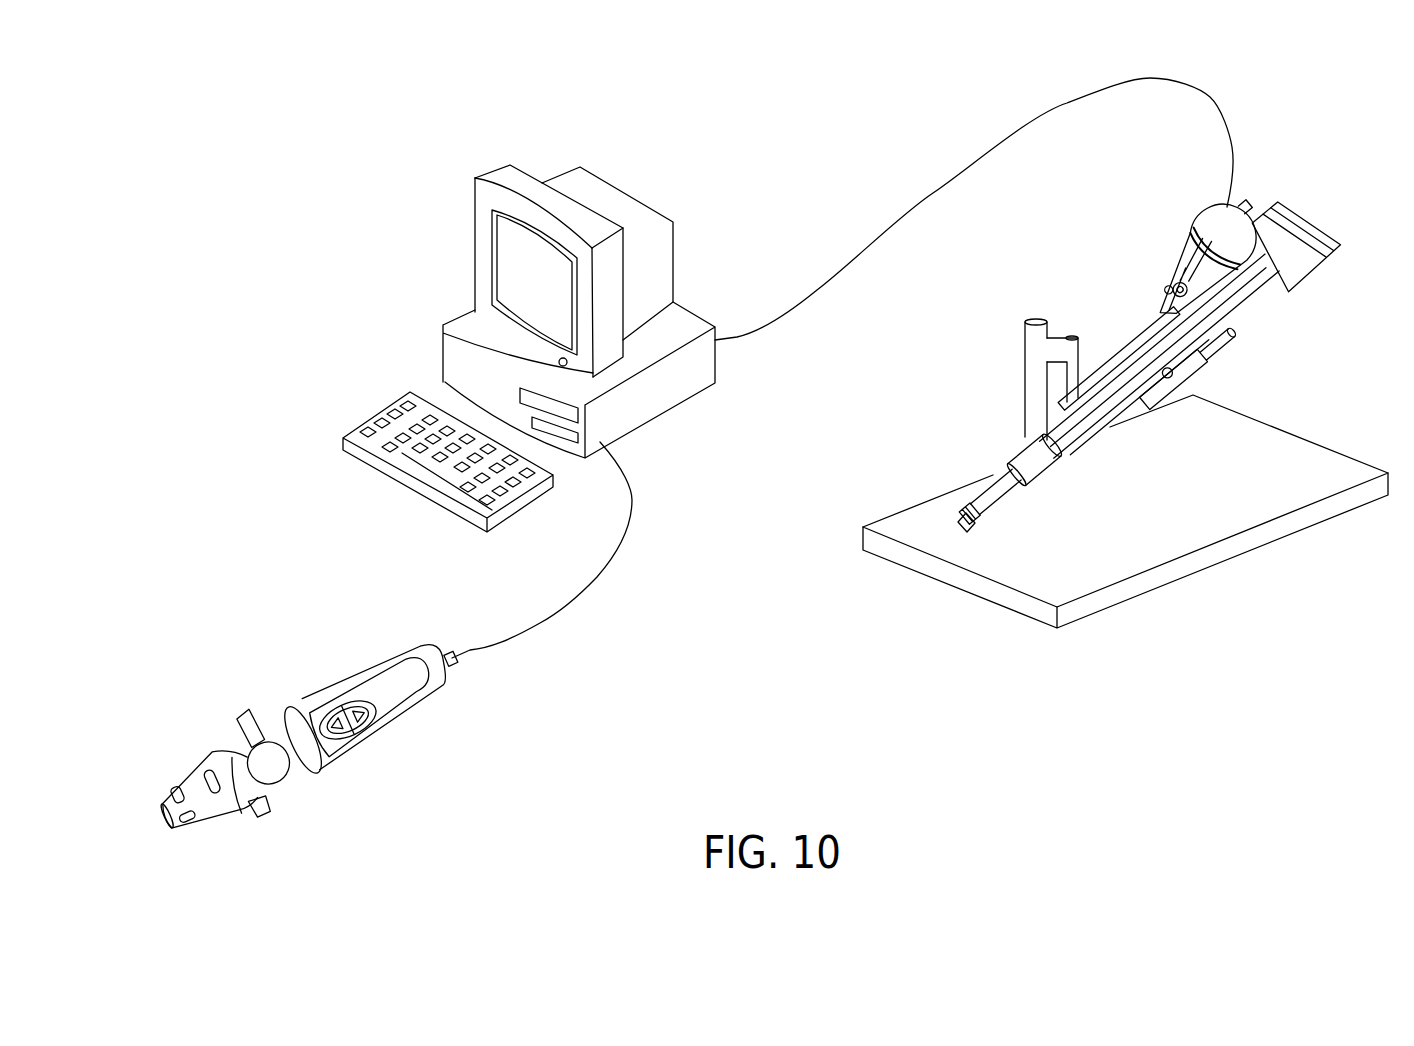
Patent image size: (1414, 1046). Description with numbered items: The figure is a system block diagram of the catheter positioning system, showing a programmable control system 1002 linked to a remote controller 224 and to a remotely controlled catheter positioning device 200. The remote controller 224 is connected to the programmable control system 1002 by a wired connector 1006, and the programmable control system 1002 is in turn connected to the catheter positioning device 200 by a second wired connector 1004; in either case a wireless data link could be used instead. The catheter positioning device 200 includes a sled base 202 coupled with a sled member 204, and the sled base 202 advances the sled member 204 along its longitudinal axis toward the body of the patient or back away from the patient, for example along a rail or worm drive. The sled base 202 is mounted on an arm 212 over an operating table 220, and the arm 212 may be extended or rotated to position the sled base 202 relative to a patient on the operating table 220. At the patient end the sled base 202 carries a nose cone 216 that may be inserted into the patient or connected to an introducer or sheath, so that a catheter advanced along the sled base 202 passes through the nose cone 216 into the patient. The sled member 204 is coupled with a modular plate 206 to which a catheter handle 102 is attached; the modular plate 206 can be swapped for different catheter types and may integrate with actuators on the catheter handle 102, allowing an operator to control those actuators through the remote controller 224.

The programmable control system 1002 is at (493, 172).
The wired connector 1004 is at (868, 247).
The wired connector 1006 is at (597, 580).
The remote controller 224 is at (313, 697).
The catheter positioning device 200 is at (1281, 161).
The sled base 202 is at (1120, 392).
The sled member 204 is at (1291, 240).
The modular plate 206 is at (1202, 255).
The catheter handle 102 is at (1180, 289).
The arm 212 is at (1023, 365).
The nose cone 216 is at (950, 533).
The operating table 220 is at (1233, 553).